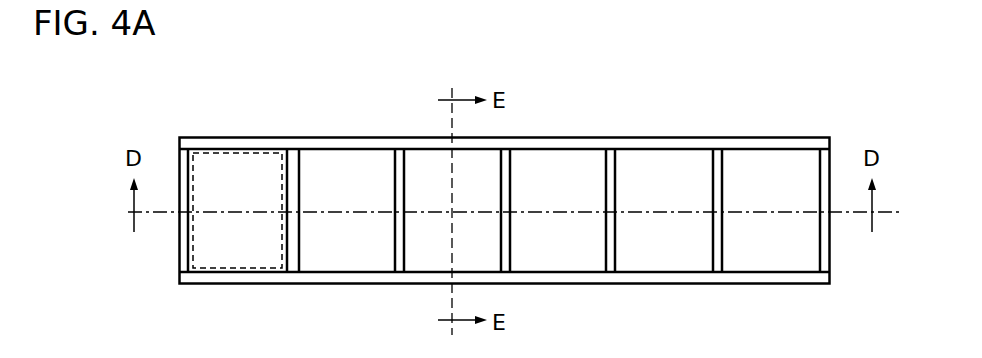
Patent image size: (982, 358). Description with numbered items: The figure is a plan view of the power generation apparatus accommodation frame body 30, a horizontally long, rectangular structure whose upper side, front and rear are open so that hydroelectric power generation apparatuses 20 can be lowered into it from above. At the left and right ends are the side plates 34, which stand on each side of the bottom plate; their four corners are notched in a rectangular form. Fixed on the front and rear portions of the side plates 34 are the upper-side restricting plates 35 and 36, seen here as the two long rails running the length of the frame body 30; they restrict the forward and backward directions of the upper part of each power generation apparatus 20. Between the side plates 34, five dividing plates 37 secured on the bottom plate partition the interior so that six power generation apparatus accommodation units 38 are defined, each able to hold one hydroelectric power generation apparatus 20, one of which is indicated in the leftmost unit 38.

The hydroelectric power generation apparatus 20 is at (242, 172).
The power generation apparatus accommodation frame body 30 is at (784, 132).
The side plate 34 is at (188, 236).
The upper-side restricting plate 35 is at (637, 279).
The upper-side restricting plate 36 is at (645, 148).
The dividing plate 37 is at (403, 180).
The power generation apparatus accommodation unit 38 is at (330, 254).